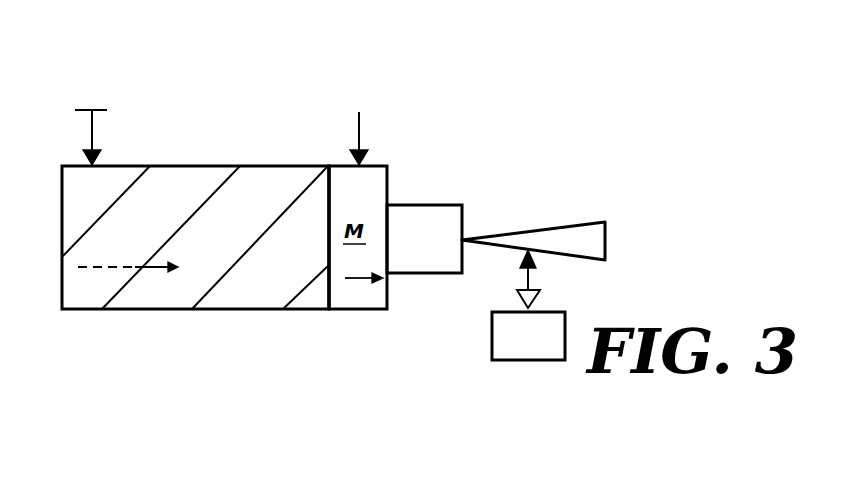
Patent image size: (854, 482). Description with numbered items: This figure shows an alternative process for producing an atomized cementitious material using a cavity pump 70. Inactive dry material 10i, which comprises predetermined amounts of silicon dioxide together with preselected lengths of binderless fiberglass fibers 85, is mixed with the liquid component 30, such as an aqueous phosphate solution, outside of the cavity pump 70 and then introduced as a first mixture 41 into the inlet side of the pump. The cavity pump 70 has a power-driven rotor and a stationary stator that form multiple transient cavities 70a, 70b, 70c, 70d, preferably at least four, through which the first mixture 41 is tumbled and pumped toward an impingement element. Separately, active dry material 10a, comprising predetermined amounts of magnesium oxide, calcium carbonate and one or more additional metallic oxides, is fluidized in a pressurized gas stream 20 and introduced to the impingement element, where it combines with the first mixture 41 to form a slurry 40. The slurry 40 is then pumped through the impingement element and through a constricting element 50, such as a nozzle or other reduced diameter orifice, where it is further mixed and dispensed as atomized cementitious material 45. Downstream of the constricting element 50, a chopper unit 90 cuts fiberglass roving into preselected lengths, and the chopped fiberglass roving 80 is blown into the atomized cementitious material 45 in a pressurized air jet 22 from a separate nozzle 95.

The inactive dry material 10i is at (97, 95).
The liquid component 30 is at (93, 107).
The binderless fiberglass fibers 85 is at (91, 126).
The active dry material 10a is at (359, 117).
The pressurized gas stream 20 is at (359, 140).
The cavity pump 70 is at (330, 340).
The inlet cavity 70a is at (105, 200).
The internal cavity 70b is at (189, 200).
The internal cavity 70c is at (278, 202).
The transient cavity 70d is at (318, 244).
The first mixture 41 is at (137, 266).
The slurry 40 is at (345, 278).
The constricting element 50 is at (435, 251).
The atomized cementitious material 45 is at (605, 240).
The chopped fiberglass roving 80 is at (530, 272).
The pressurized air jet 22 is at (528, 282).
The separate nozzle 95 is at (540, 296).
The chopper unit 90 is at (543, 346).